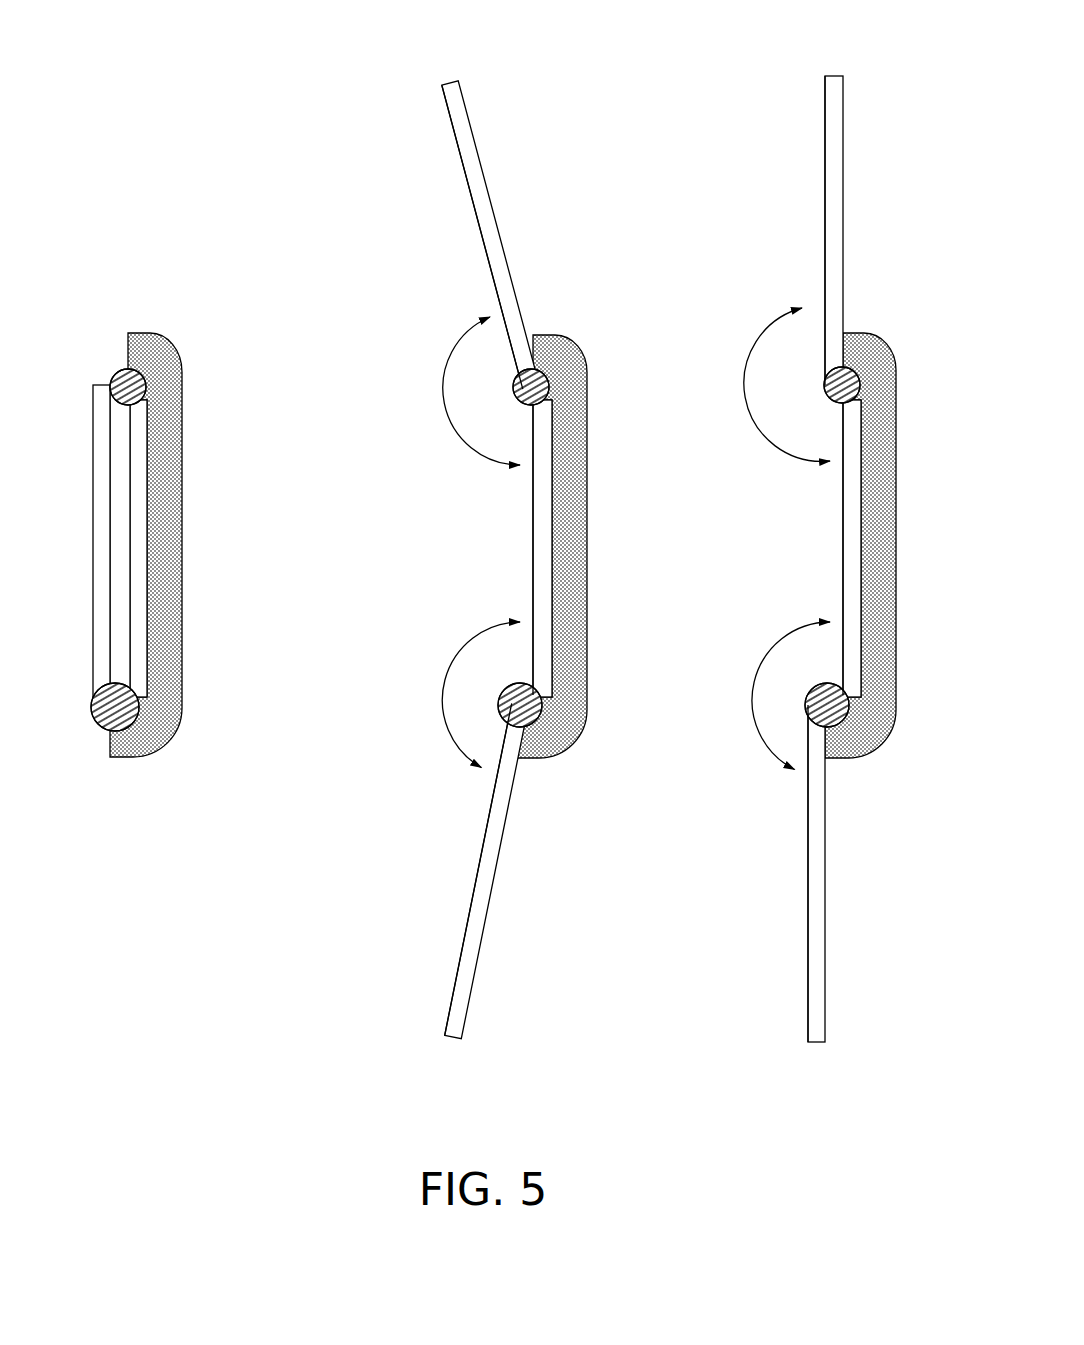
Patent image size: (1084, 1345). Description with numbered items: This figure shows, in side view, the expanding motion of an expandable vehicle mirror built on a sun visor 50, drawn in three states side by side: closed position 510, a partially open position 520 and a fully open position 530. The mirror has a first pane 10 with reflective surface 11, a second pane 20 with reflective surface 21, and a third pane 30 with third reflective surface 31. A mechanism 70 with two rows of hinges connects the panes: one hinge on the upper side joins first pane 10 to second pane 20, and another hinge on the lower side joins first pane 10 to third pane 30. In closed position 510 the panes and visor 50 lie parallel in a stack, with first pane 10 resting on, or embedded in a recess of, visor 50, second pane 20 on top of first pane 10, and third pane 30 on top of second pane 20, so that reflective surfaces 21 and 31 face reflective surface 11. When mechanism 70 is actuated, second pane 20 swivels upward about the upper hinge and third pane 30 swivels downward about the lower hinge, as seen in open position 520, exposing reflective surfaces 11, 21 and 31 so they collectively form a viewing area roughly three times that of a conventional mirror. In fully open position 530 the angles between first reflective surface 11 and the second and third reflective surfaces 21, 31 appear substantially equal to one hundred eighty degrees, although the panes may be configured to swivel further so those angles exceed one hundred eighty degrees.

The first pane 10 is at (495, 548).
The reflective surface 11 is at (530, 532).
The second pane 20 is at (476, 386).
The reflective surface 21 is at (460, 206).
The third pane 30 is at (459, 713).
The third reflective surface 31 is at (458, 907).
The sun visor 50 is at (151, 545).
The mechanism 70 is at (148, 370).
The closed position 510 is at (129, 260).
The open position 520 is at (444, 50).
The open position 530 is at (815, 50).